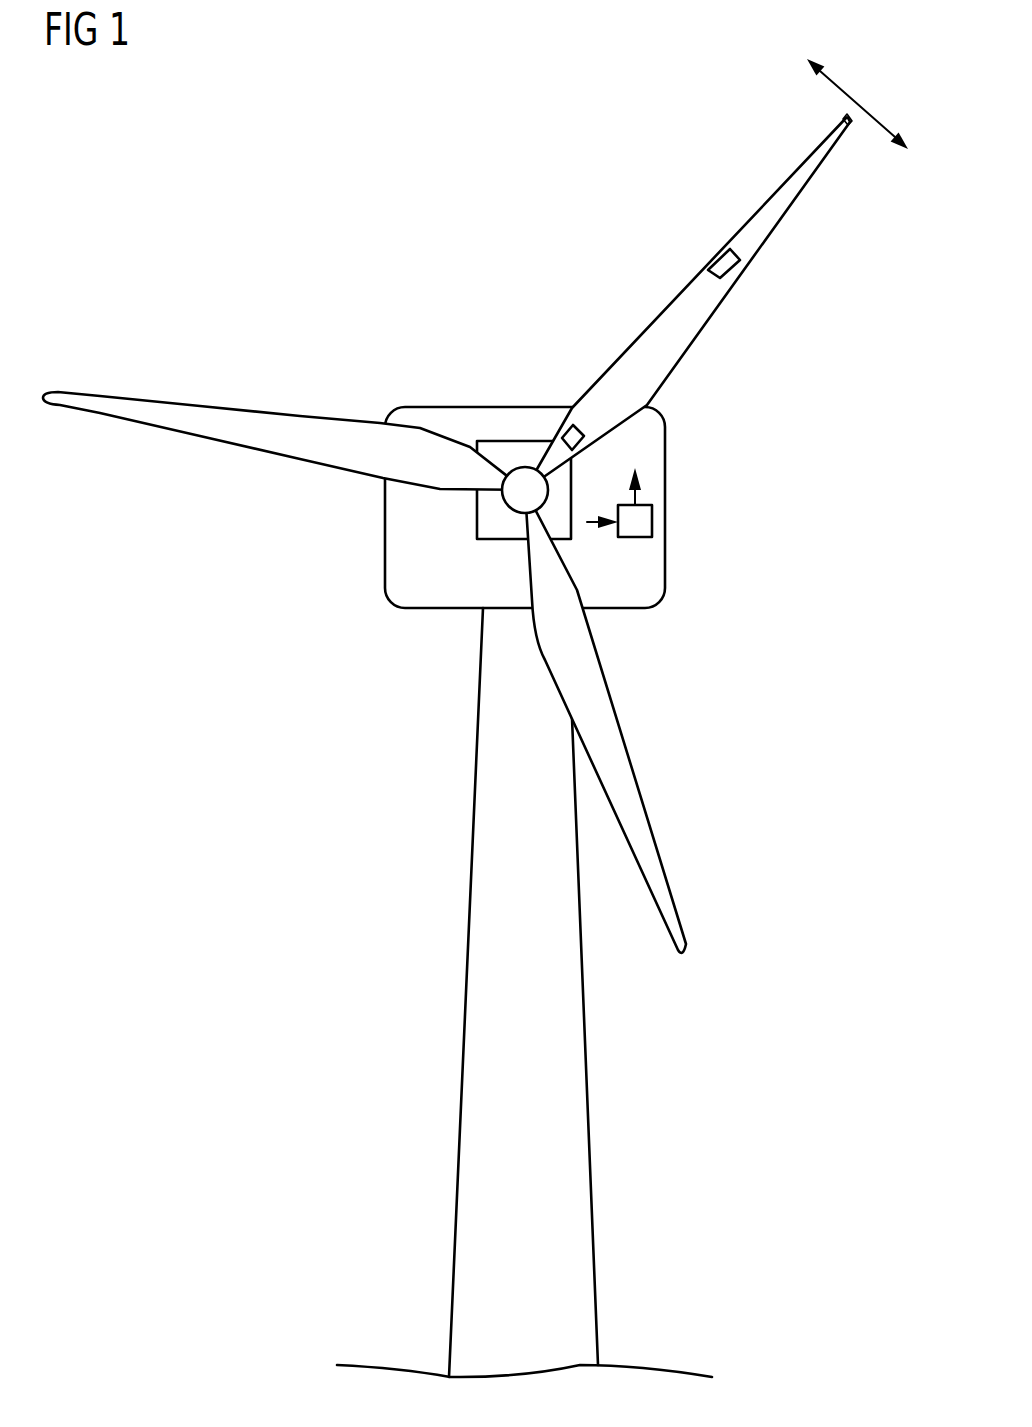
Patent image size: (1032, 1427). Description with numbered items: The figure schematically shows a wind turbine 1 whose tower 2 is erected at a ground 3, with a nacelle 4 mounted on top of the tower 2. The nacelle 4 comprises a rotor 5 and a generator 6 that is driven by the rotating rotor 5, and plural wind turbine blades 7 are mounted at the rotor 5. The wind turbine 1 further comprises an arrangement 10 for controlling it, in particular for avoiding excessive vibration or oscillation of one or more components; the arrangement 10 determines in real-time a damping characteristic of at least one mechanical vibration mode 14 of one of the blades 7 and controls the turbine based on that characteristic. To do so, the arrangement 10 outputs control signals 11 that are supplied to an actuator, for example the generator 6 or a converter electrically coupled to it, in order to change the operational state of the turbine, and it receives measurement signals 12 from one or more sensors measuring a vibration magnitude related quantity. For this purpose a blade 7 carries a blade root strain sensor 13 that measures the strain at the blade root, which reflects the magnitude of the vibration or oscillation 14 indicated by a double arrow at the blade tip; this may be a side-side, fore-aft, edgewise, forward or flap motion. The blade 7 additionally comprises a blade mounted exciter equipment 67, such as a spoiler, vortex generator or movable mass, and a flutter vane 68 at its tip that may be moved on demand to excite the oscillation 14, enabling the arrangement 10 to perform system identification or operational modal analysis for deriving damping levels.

The wind turbine 1 is at (226, 181).
The tower 2 is at (480, 1018).
The ground 3 is at (658, 1368).
The nacelle 4 is at (385, 538).
The rotor 5 is at (518, 472).
The generator 6 is at (534, 440).
The wind turbine blade 7 is at (306, 418).
The arrangement 10 is at (652, 519).
The control signals 11 is at (616, 462).
The measurement signals 12 is at (578, 503).
The blade root strain sensor 13 is at (578, 425).
The vibration or oscillation 14 is at (851, 88).
The blade mounted exciter equipment 67 is at (716, 256).
The flutter vane 68 is at (845, 120).